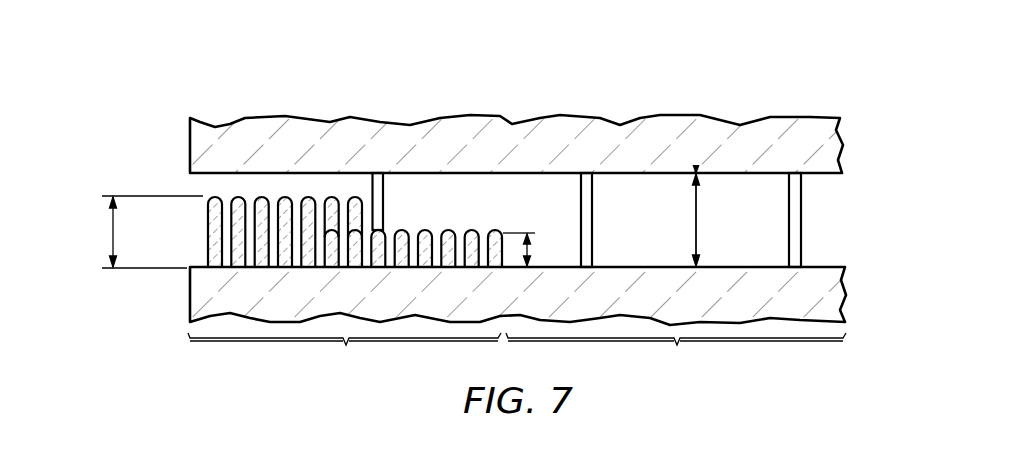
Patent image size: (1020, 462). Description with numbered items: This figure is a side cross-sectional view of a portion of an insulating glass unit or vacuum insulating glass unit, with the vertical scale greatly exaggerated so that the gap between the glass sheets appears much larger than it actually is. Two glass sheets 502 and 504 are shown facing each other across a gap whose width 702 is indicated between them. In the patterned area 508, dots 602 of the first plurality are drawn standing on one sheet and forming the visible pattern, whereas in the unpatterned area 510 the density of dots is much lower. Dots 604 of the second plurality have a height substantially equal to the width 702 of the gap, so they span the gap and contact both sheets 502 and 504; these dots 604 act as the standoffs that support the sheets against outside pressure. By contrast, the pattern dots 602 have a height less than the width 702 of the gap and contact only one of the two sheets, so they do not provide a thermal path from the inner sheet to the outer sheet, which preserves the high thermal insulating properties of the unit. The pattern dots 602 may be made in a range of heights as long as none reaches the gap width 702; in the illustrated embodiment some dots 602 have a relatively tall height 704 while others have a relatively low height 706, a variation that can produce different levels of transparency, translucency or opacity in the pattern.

The sheet 502 is at (190, 148).
The sheet 504 is at (190, 290).
The patterned area 508 is at (344, 357).
The unpatterned area 510 is at (676, 357).
The dots of the first plurality 602 is at (208, 235).
The dots of the second plurality 604 is at (384, 216).
The width of the gap 702 is at (698, 218).
The relatively tall height 704 is at (111, 232).
The relatively low height 706 is at (532, 247).